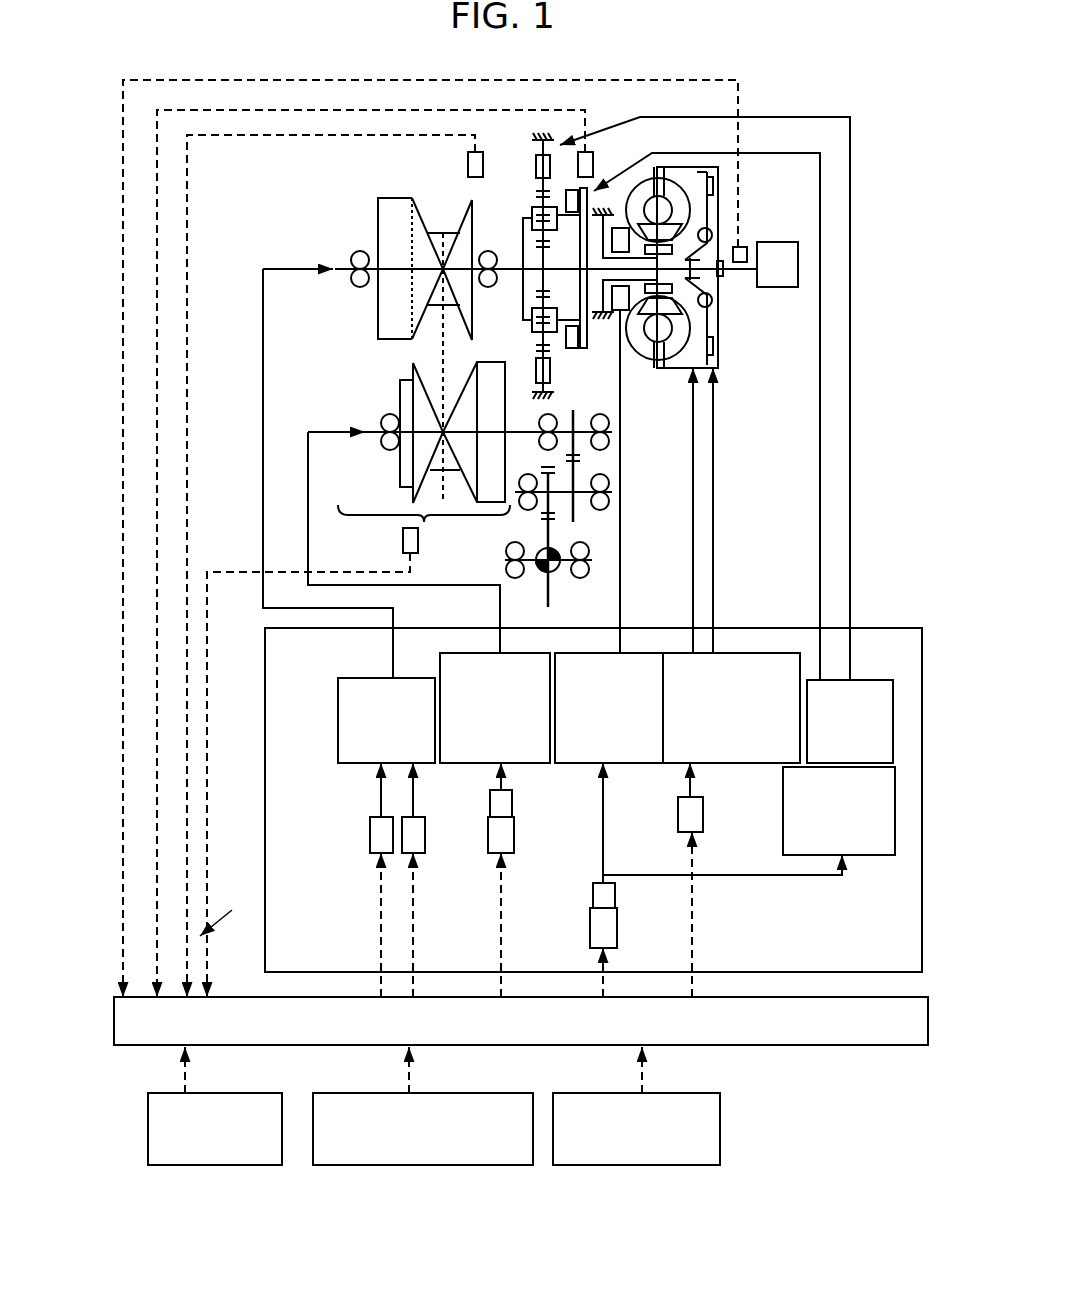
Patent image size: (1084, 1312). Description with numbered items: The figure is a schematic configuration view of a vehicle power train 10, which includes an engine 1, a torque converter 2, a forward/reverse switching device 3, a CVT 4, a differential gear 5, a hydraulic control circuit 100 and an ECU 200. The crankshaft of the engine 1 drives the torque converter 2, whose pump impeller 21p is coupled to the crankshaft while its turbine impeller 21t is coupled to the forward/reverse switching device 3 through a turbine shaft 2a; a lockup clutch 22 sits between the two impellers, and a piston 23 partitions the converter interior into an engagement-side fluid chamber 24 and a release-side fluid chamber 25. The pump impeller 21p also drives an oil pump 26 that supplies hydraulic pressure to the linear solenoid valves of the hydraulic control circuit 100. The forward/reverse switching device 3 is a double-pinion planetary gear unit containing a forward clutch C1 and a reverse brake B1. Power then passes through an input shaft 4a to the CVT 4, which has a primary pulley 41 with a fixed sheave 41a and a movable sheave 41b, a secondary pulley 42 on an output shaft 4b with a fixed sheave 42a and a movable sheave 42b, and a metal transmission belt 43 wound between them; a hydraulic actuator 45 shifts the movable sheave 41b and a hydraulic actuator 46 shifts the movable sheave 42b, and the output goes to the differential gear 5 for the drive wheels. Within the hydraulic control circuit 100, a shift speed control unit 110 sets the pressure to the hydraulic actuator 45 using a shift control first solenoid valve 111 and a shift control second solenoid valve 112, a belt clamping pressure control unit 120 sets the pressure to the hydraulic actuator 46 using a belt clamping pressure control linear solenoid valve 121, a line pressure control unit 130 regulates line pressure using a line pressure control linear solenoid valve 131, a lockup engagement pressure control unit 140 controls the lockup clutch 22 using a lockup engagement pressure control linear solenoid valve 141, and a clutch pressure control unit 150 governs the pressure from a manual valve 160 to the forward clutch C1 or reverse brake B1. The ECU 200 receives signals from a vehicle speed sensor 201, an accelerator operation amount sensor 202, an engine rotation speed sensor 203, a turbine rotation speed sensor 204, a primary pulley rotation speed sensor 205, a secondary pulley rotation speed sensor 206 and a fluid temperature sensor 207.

The engine 1 is at (779, 242).
The torque converter 2 is at (683, 282).
The turbine shaft 2a is at (588, 270).
The forward/reverse switching device 3 is at (461, 273).
The CVT 4 is at (437, 356).
The input shaft 4a is at (507, 268).
The output shaft 4b is at (518, 430).
The differential gear 5 is at (560, 578).
The power train 10 is at (796, 70).
The pump impeller 21p is at (646, 350).
The turbine impeller 21t is at (664, 196).
The lockup clutch 22 is at (722, 352).
The piston 23 is at (711, 320).
The engagement-side fluid chamber 24 is at (668, 368).
The release-side fluid chamber 25 is at (722, 331).
The oil pump 26 is at (618, 322).
The primary pulley 41 is at (380, 253).
The fixed sheave 41a is at (456, 238).
The movable sheave 41b is at (389, 253).
The secondary pulley 42 is at (459, 419).
The fixed sheave 42a is at (426, 458).
The movable sheave 42b is at (464, 419).
The transmission belt 43 is at (440, 342).
The hydraulic actuator 45 is at (386, 308).
The hydraulic actuator 46 is at (489, 372).
The hydraulic control circuit 100 is at (593, 777).
The shift speed control unit 110 is at (418, 678).
The shift control first solenoid valve 111 is at (370, 840).
The shift control second solenoid valve 112 is at (425, 840).
The belt clamping pressure control unit 120 is at (518, 653).
The belt clamping pressure control linear solenoid valve 121 is at (514, 840).
The line pressure control unit 130 is at (634, 653).
The line pressure control linear solenoid valve 131 is at (617, 935).
The lockup engagement pressure control unit 140 is at (745, 653).
The lockup engagement pressure control linear solenoid valve 141 is at (703, 825).
The clutch pressure control unit 150 is at (783, 806).
The manual valve 160 is at (870, 680).
The electronic control unit 200 is at (880, 1047).
The vehicle speed sensor 201 is at (230, 1166).
The accelerator operation amount sensor 202 is at (428, 1166).
The engine rotation speed sensor 203 is at (742, 247).
The turbine rotation speed sensor 204 is at (593, 165).
The primary pulley rotation speed sensor 205 is at (468, 165).
The secondary pulley rotation speed sensor 206 is at (418, 540).
The fluid temperature sensor 207 is at (620, 1166).
The reverse brake B1 is at (536, 168).
The forward clutch C1 is at (570, 216).